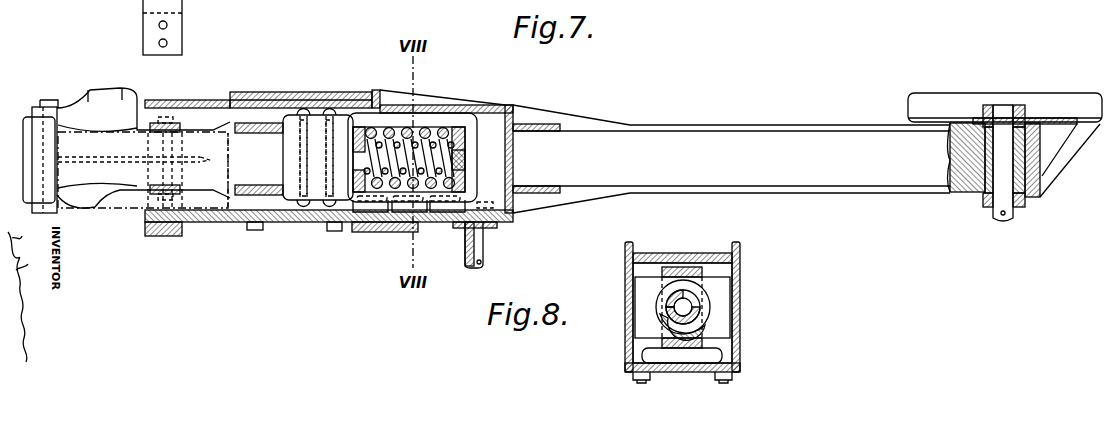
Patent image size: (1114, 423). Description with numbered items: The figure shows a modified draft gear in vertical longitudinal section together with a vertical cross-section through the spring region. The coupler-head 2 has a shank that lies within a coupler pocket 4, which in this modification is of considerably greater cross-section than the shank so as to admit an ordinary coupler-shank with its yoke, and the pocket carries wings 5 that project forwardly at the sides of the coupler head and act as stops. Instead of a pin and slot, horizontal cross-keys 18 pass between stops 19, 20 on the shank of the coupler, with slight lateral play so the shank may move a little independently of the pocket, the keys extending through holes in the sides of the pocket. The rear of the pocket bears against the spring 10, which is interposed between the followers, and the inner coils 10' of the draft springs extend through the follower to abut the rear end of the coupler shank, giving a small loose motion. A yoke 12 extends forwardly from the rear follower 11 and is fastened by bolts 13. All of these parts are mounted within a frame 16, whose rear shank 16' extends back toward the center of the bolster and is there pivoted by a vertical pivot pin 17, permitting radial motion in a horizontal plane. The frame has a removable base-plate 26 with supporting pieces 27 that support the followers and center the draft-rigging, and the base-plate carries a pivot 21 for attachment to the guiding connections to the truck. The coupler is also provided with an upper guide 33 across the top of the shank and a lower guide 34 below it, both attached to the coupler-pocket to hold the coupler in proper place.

In FIG. 7, the coupler-head 2 is at (130, 150).
In FIG. 7, the coupler pocket 4 is at (176, 104).
In FIG. 7, the wings 5 is at (66, 212).
In FIG. 7, the spring 10 is at (427, 157).
In FIG. 8, the spring 10 is at (718, 303).
In FIG. 7, the inner coils 10' is at (478, 157).
In FIG. 8, the inner coils 10' is at (717, 323).
In FIG. 7, the rear follower 11 is at (460, 173).
In FIG. 8, the rear follower 11 is at (720, 310).
In FIG. 7, the yoke 12 is at (362, 122).
In FIG. 8, the yoke 12 is at (678, 268).
In FIG. 7, the bolts 13 is at (328, 118).
In FIG. 7, the frame 16 is at (446, 145).
In FIG. 8, the frame 16 is at (682, 304).
In FIG. 7, the rear shank 16' is at (731, 159).
In FIG. 7, the vertical pivot pin 17 is at (1005, 157).
In FIG. 7, the horizontal cross-keys 18 is at (258, 134).
In FIG. 7, the stop 19 is at (230, 120).
In FIG. 7, the stop 20 is at (289, 132).
In FIG. 7, the pivot 21 is at (484, 256).
In FIG. 7, the base-plate 26 is at (310, 223).
In FIG. 8, the base-plate 26 is at (700, 372).
In FIG. 7, the supporting pieces 27 is at (448, 214).
In FIG. 8, the supporting pieces 27 is at (648, 352).
In FIG. 7, the upper guide 33 is at (180, 127).
In FIG. 7, the lower guide 34 is at (180, 192).